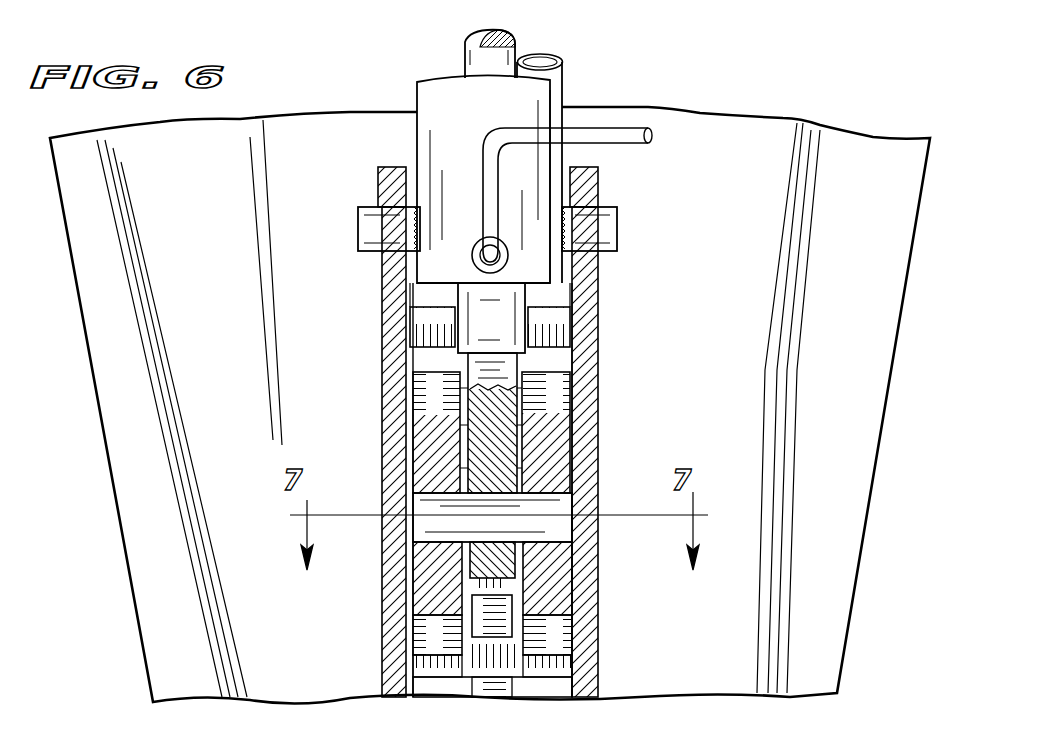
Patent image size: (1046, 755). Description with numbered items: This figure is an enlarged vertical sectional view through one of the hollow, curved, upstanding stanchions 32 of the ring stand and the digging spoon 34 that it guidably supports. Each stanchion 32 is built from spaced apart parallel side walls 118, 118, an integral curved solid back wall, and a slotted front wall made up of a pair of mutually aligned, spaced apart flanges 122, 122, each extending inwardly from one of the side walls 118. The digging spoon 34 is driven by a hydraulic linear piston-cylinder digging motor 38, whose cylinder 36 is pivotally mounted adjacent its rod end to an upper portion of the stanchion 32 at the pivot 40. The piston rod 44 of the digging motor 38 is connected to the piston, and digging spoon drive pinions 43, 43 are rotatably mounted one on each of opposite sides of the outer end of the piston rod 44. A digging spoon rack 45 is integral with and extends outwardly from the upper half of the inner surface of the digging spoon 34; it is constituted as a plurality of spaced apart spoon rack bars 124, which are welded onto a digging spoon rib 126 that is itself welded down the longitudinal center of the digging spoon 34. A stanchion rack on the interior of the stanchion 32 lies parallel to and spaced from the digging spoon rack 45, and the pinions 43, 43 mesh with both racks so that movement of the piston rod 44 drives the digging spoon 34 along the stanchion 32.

The stanchion 32 is at (598, 310).
The digging spoon 34 is at (768, 130).
The cylinder 36 is at (563, 87).
The hydraulic linear piston-cylinder digging motor 38 is at (417, 94).
The pivotal mounting 40 is at (607, 223).
The digging spoon drive pinion 43 is at (432, 442).
The piston rod 44 is at (513, 50).
The digging spoon rack 45 is at (555, 335).
The side wall 118 is at (595, 392).
The flange 122 is at (417, 295).
The spoon rack bar 124 is at (538, 340).
The digging spoon rib 126 is at (500, 622).